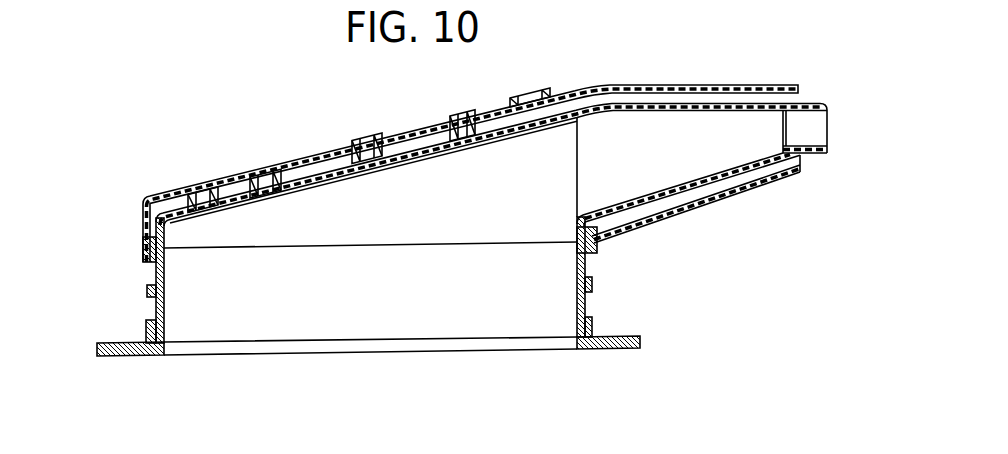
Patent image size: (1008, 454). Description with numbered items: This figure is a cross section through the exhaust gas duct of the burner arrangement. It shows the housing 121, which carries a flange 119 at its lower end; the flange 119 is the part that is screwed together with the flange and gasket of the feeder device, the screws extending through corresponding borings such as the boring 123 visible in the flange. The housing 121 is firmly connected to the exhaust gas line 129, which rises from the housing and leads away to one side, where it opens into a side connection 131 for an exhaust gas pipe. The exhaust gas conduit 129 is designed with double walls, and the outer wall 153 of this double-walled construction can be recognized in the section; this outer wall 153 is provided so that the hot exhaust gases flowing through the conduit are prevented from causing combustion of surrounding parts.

The outer wall 153 is at (316, 156).
The side connection 131 is at (818, 158).
The exhaust gas line 129 is at (146, 291).
The housing 121 is at (587, 281).
The flange 119 is at (146, 357).
The boring 123 is at (626, 348).